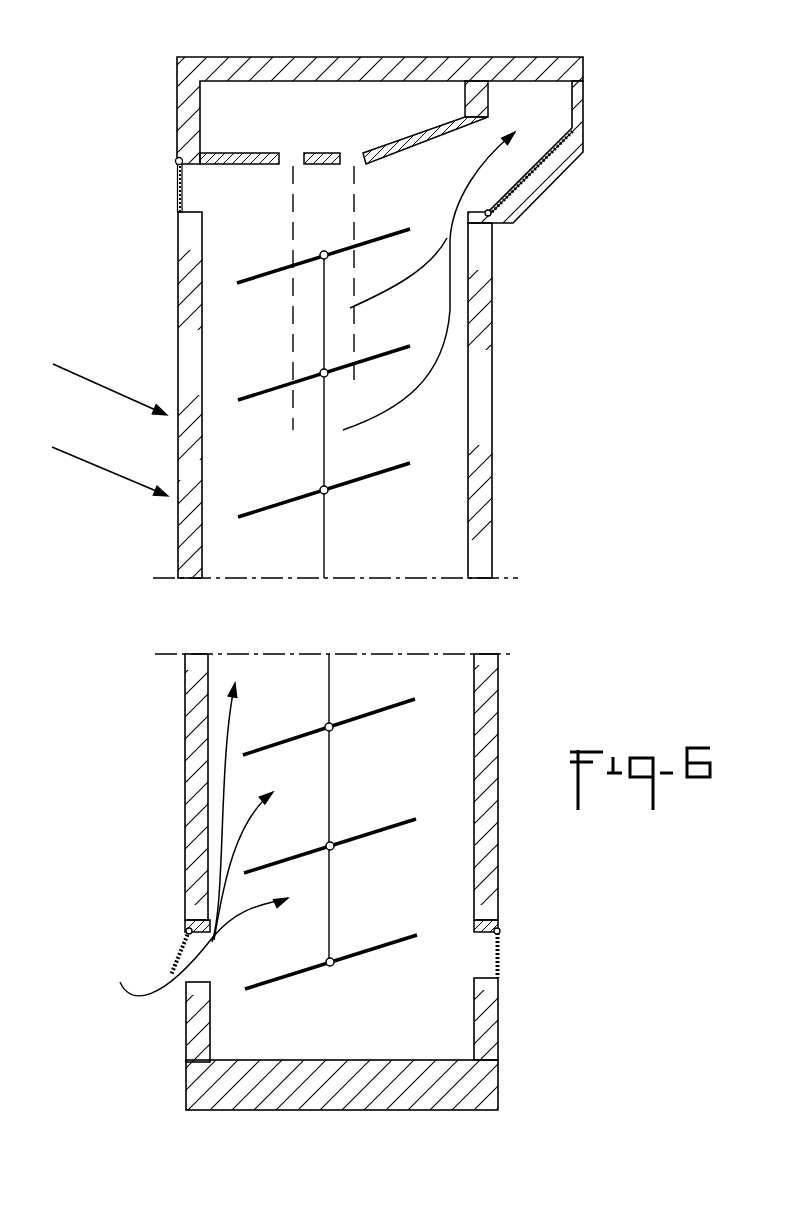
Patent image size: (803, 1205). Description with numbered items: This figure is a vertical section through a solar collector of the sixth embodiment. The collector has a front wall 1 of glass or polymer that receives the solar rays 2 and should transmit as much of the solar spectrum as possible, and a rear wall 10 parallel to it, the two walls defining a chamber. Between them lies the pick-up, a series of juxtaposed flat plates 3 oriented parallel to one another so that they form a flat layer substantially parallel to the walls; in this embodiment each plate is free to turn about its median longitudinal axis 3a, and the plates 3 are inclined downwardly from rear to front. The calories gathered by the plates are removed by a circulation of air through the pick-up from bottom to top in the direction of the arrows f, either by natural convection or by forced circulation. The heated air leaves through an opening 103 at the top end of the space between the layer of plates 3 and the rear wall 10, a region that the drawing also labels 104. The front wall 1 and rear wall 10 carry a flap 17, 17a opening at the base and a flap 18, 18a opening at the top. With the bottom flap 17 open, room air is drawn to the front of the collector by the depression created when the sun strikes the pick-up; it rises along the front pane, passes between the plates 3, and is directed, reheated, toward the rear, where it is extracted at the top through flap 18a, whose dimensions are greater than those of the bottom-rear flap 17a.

The front wall 1 is at (187, 540).
The solar rays 2 is at (61, 447).
The plates 3 is at (382, 473).
The median longitudinal axis 3a is at (333, 843).
The rear wall 10 is at (485, 492).
The flap 17 is at (177, 958).
The flap 17a is at (502, 957).
The flap 18 is at (178, 182).
The flap 18a is at (530, 168).
The opening 103 is at (482, 133).
The air chamber 104 is at (443, 427).
The arrows f is at (448, 302).